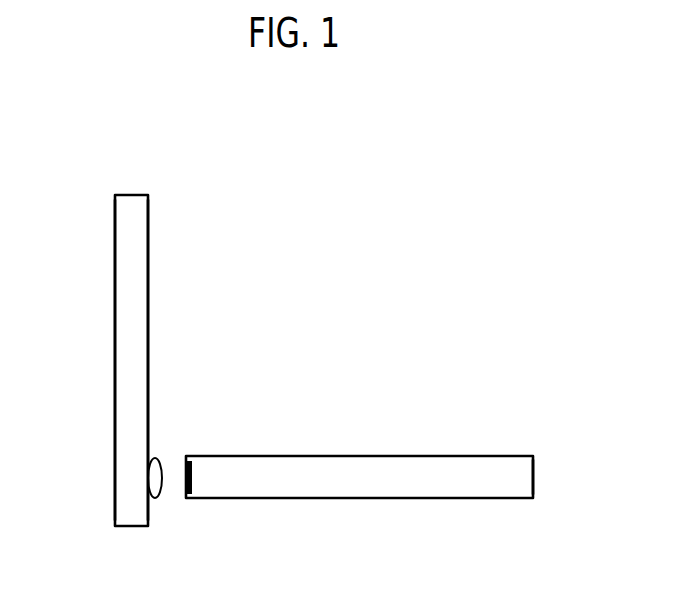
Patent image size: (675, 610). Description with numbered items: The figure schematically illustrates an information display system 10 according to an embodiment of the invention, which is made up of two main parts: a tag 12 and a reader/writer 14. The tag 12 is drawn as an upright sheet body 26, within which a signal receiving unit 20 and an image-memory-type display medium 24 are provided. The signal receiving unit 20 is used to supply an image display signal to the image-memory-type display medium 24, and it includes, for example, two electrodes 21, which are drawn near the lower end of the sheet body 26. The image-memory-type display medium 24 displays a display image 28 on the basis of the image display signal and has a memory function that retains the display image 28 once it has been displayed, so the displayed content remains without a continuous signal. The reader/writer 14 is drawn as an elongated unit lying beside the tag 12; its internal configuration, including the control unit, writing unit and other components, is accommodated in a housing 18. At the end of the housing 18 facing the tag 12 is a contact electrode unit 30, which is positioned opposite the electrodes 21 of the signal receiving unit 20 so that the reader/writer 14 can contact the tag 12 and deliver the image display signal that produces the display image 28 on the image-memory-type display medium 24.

The information display system 10 is at (473, 186).
The tag 12 is at (130, 191).
The reader/writer 14 is at (522, 408).
The housing 18 is at (534, 475).
The signal receiving unit 20 is at (164, 506).
The electrodes 21 is at (151, 478).
The image-memory-type display medium 24 is at (149, 231).
The sheet body 26 is at (114, 315).
The display image 28 is at (164, 295).
The contact electrode unit 30 is at (192, 480).